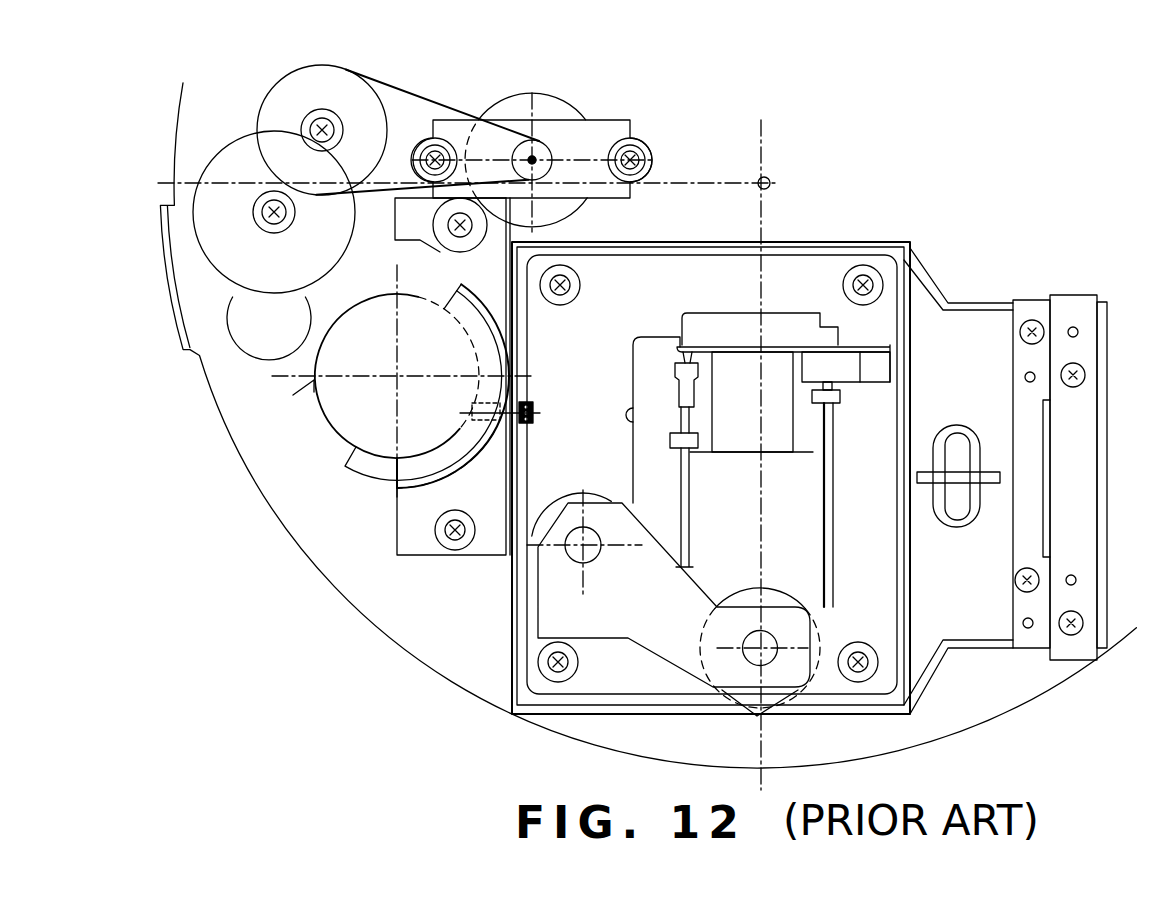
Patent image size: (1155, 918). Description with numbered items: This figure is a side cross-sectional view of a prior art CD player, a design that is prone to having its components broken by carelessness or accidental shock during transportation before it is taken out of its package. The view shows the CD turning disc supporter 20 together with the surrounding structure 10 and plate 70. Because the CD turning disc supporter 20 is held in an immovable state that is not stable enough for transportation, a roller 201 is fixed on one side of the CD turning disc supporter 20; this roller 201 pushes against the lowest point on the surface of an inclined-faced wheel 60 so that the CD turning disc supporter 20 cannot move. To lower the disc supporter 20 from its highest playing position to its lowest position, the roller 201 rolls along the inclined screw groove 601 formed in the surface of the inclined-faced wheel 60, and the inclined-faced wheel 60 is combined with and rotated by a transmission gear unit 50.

The frame 10 is at (362, 598).
The CD turning disc supporter 20 is at (826, 268).
The transmission gear unit 50 is at (407, 73).
The inclined-faced wheel 60 is at (321, 441).
The mounting plate 70 is at (421, 556).
The roller 201 is at (522, 388).
The inclined screw groove 601 is at (446, 252).